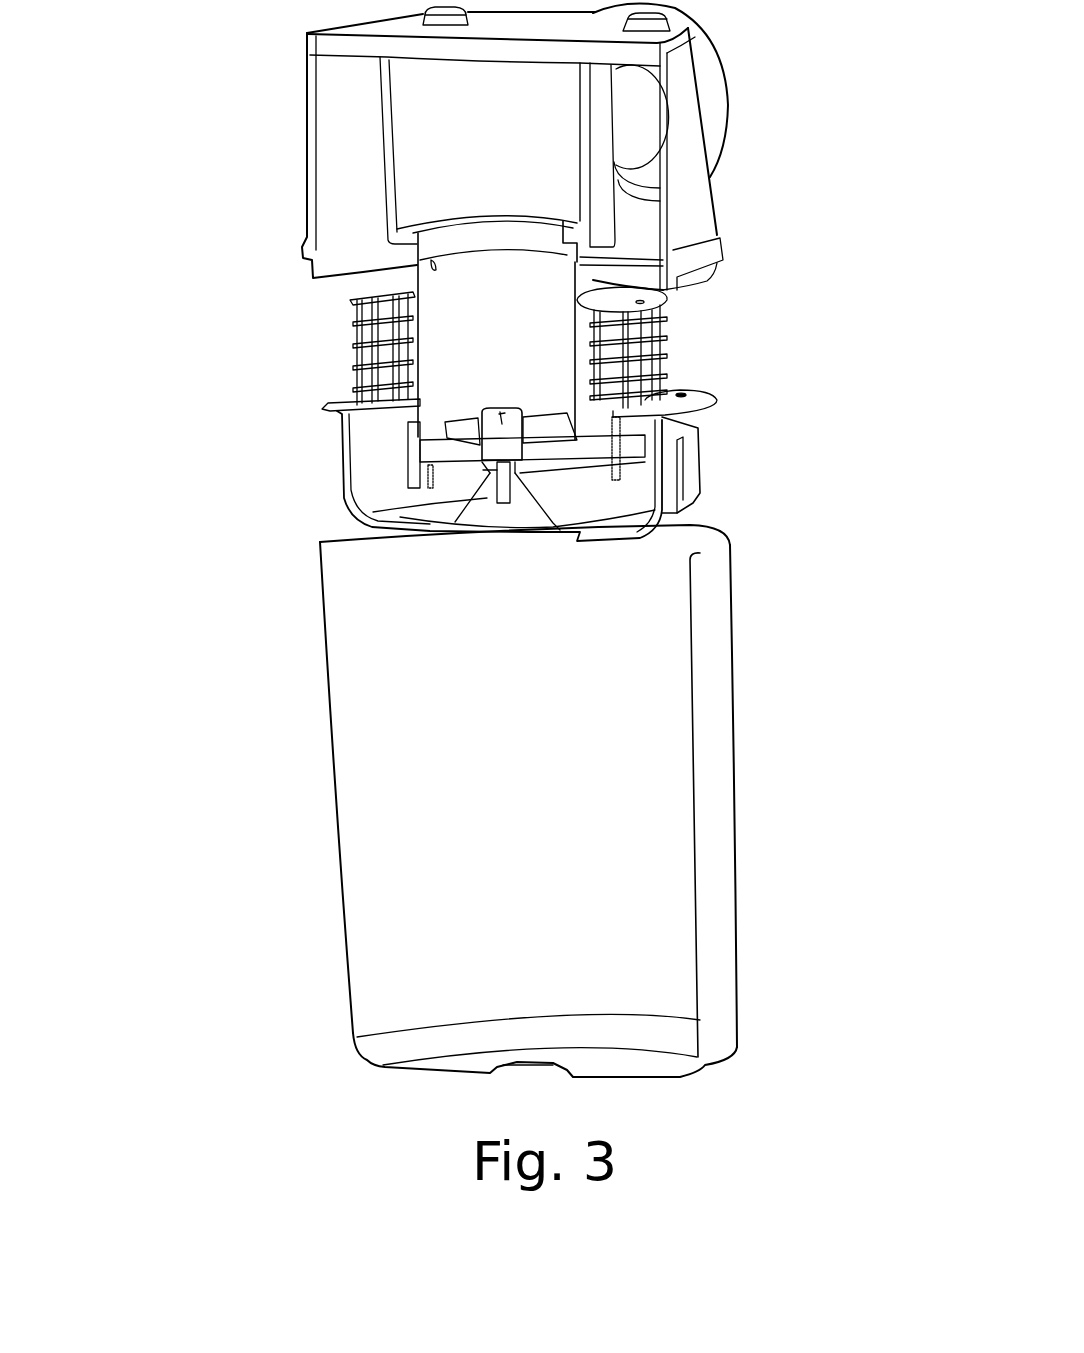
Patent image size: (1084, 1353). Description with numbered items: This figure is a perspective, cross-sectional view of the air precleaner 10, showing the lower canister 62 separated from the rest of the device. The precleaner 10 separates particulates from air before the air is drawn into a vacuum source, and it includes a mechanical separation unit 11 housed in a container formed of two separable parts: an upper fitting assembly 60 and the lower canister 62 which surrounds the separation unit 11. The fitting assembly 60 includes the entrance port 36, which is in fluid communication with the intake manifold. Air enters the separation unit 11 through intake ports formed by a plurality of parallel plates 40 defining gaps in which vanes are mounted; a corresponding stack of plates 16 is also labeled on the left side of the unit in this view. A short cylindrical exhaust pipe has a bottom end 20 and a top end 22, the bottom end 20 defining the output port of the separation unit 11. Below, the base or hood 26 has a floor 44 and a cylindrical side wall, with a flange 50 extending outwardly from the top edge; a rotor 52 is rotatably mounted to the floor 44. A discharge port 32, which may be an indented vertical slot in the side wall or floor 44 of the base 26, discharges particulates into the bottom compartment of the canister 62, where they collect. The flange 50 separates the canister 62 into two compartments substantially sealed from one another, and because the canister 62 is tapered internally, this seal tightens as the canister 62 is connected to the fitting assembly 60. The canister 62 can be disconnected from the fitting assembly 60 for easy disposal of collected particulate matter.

The air precleaner 10 is at (297, 560).
The mechanical separation unit 11 is at (313, 413).
The left contact stack 16 is at (467, 312).
The bottom end 20 is at (430, 453).
The top end 22 is at (503, 238).
The base or hood 26 is at (340, 493).
The discharge port 32 is at (700, 460).
The entrance port 36 is at (727, 77).
The parallel plates 40 is at (636, 380).
The floor 44 is at (560, 528).
The flange 50 is at (713, 397).
The rotor 52 is at (456, 457).
The fitting assembly 60 is at (693, 218).
The canister 62 is at (720, 720).